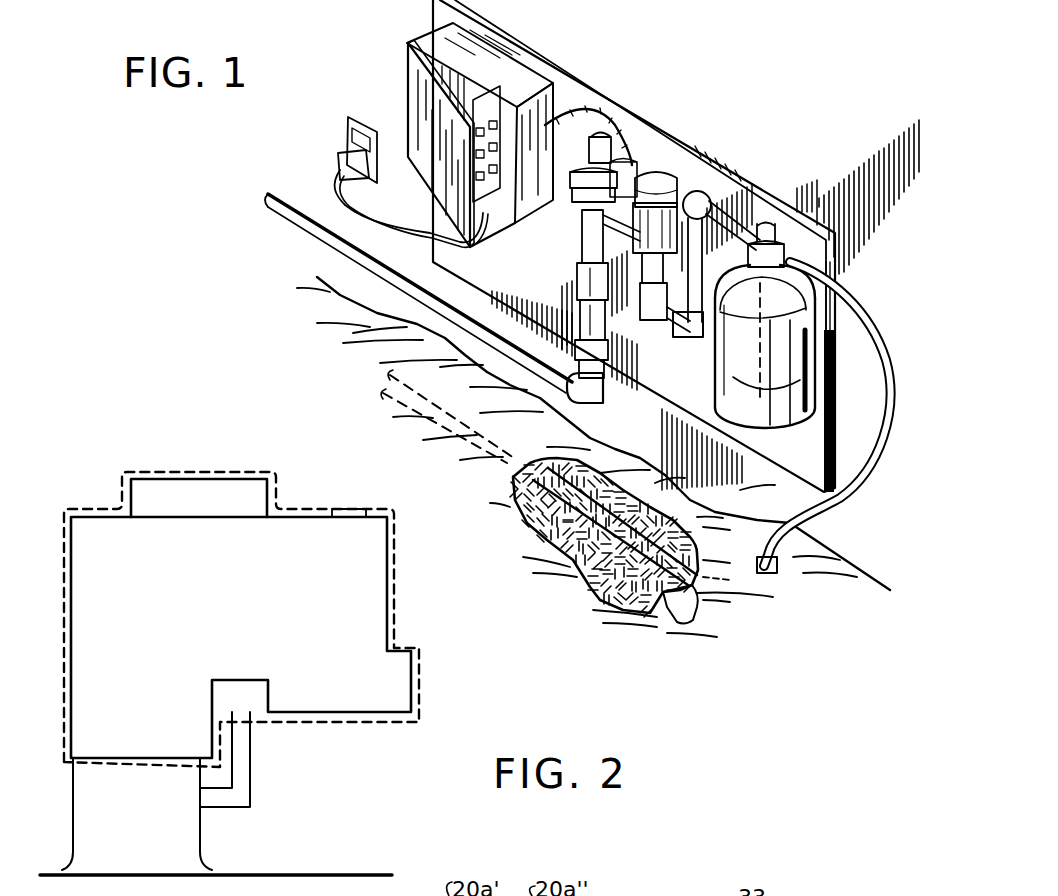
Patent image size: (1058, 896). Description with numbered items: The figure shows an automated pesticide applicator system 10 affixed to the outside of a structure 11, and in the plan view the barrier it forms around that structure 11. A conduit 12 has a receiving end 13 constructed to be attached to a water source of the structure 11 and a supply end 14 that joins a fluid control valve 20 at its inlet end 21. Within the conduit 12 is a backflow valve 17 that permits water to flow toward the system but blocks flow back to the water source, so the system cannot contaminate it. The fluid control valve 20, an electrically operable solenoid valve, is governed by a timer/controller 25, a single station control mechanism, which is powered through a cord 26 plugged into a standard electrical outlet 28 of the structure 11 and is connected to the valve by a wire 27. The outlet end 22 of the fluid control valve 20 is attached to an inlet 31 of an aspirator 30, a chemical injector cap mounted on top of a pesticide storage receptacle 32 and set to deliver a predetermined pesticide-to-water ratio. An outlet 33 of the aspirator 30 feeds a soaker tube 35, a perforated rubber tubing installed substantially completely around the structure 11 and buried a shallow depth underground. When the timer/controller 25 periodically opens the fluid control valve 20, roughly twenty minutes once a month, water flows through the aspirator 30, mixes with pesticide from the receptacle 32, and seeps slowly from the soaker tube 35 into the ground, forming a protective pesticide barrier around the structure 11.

In FIG. 1, the automated pesticide applicator system 10 is at (716, 152).
In FIG. 2, the automated pesticide applicator system 10 is at (347, 515).
In FIG. 1, the structure 11 is at (431, 1).
In FIG. 2, the structure 11 is at (363, 578).
In FIG. 1, the conduit 12 is at (317, 230).
In FIG. 1, the receiving end 13 is at (267, 196).
In FIG. 1, the supply end 14 is at (582, 247).
In FIG. 1, the backflow valve 17 is at (610, 368).
In FIG. 1, the fluid control valve 20 is at (663, 170).
In FIG. 1, the inlet end 21 is at (580, 226).
In FIG. 1, the outlet end 22 is at (707, 205).
In FIG. 1, the timer/controller 25 is at (507, 77).
In FIG. 1, the cord 26 is at (333, 187).
In FIG. 1, the wire 27 is at (597, 110).
In FIG. 1, the electrical outlet 28 is at (347, 118).
In FIG. 1, the aspirator 30 is at (787, 246).
In FIG. 1, the inlet 31 is at (704, 338).
In FIG. 1, the pesticide storage receptacle 32 is at (780, 363).
In FIG. 1, the outlet 33 is at (790, 260).
In FIG. 1, the soaker tube 35 is at (700, 622).
In FIG. 2, the soaker tube 35 is at (397, 622).